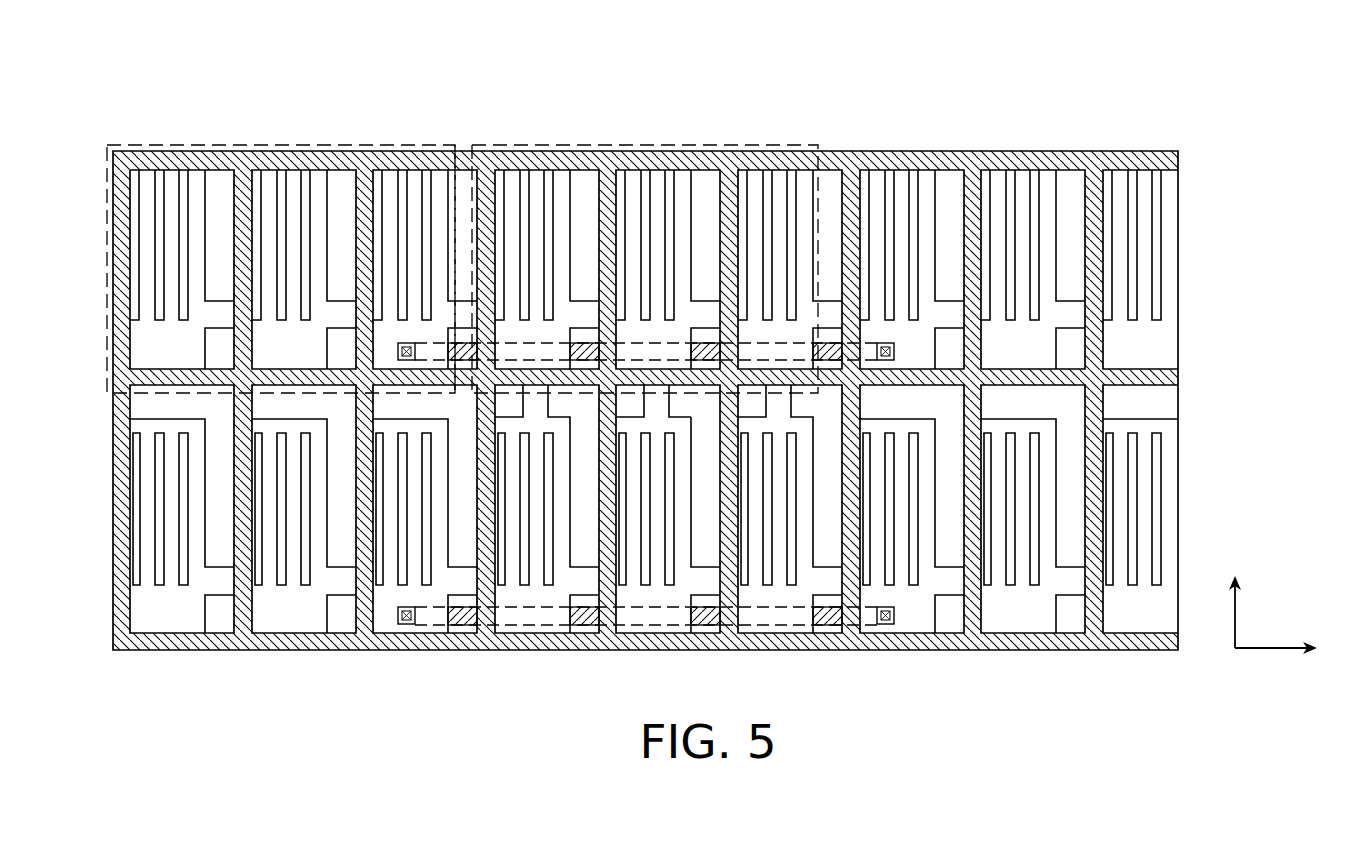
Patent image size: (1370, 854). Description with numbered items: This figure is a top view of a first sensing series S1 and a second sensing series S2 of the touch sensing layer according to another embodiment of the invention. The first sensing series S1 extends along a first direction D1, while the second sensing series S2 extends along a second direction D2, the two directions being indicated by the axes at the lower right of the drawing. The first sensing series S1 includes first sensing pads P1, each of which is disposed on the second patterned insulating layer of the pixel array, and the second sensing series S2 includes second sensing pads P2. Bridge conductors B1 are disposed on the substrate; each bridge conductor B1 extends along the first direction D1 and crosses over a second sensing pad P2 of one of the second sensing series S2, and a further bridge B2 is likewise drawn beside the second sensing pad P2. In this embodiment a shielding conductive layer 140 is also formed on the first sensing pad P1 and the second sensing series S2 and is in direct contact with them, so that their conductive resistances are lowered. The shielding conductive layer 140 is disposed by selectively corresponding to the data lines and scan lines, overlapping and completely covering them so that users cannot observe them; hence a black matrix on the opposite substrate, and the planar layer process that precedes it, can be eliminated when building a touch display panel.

The shielding conductive layer 140 is at (313, 158).
The first sensing series S1 is at (592, 68).
The second sensing series S2 is at (728, 68).
The first sensing pad P1 is at (454, 144).
The bridge conductor B1 is at (582, 355).
The second sensing pad P2 is at (647, 144).
The second bridge portion B2 is at (662, 407).
The first direction D1 is at (1297, 651).
The second direction D2 is at (1234, 594).